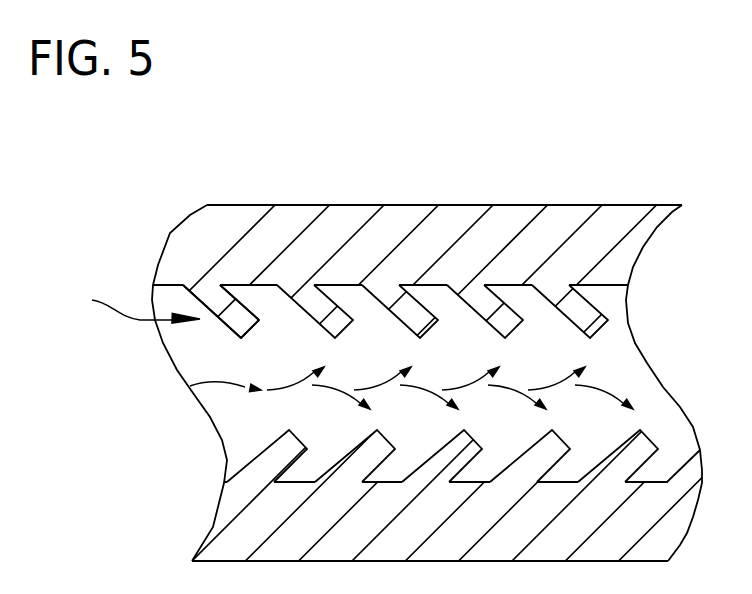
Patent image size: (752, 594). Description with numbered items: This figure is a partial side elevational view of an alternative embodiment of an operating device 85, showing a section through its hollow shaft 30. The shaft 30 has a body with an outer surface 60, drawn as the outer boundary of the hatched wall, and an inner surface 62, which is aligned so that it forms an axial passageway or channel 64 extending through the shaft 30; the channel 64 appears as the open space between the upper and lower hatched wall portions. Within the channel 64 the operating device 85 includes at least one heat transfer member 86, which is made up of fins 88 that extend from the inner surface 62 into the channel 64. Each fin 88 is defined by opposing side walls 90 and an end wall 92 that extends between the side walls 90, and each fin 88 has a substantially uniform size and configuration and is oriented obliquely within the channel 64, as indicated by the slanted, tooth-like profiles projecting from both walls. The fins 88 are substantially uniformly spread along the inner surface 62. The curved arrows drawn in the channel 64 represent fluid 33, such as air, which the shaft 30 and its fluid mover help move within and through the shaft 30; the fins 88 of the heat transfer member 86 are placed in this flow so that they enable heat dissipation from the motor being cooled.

The hollow shaft 30 is at (232, 220).
The outer surface 60 is at (310, 204).
The inner surface 62 is at (267, 280).
The operating device 85 is at (395, 189).
The heat transfer member 86 is at (129, 303).
The fin 88 is at (240, 313).
The side walls 90 is at (238, 300).
The end wall 92 is at (257, 328).
The fluid 33 is at (288, 388).
The channel 64 is at (566, 361).